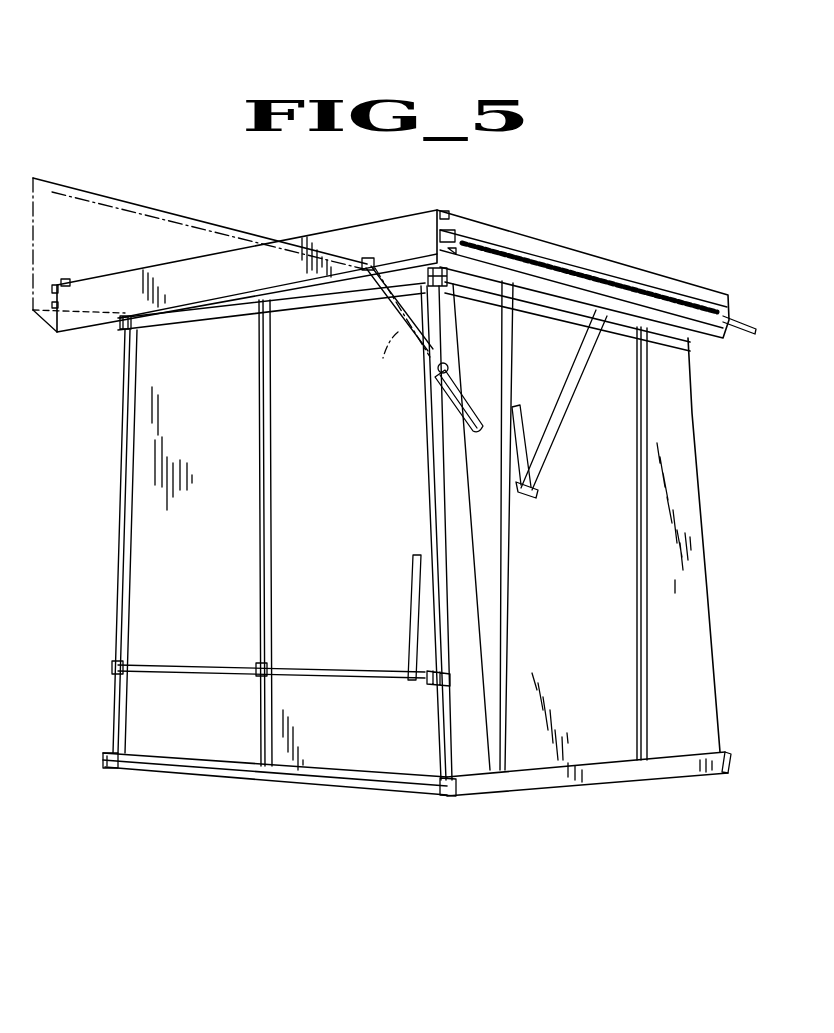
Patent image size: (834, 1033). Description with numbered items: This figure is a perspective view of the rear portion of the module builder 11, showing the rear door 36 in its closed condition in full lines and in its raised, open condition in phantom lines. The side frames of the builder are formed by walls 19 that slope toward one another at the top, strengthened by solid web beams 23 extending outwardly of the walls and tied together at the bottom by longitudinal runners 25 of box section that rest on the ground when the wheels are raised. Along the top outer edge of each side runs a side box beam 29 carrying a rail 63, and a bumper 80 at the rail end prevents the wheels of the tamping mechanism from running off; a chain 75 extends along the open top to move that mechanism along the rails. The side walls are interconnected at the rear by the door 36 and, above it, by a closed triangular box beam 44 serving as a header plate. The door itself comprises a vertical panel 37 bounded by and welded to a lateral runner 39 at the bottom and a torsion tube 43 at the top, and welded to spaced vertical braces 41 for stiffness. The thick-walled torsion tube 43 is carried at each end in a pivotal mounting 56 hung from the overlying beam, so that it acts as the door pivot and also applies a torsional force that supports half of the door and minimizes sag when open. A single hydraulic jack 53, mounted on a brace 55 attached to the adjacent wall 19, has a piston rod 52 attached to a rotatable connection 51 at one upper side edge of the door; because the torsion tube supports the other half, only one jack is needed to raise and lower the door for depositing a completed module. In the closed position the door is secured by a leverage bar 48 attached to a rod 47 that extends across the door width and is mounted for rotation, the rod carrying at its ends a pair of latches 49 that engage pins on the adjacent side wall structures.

The module builder 11 is at (549, 197).
The wall 19 is at (690, 377).
The web beam 23 is at (625, 632).
The longitudinal runner 25 is at (120, 770).
The side box beam 29 is at (729, 308).
The rear door 36 is at (120, 195).
The vertical panel 37 is at (140, 575).
The lateral runner 39 is at (218, 769).
The vertical brace 41 is at (137, 386).
The torsion tube 43 is at (203, 317).
The triangular box beam 44 is at (340, 228).
The rod 47 is at (338, 669).
The leverage bar 48 is at (412, 585).
The latch 49 is at (449, 676).
The rotatable connection 51 is at (430, 362).
The piston rod 52 is at (437, 376).
The hydraulic jack 53 is at (466, 394).
The brace 55 is at (547, 452).
The pivotal mounting 56 is at (116, 326).
The rail 63 is at (53, 288).
The chain 75 is at (678, 298).
The bumper 80 is at (67, 279).